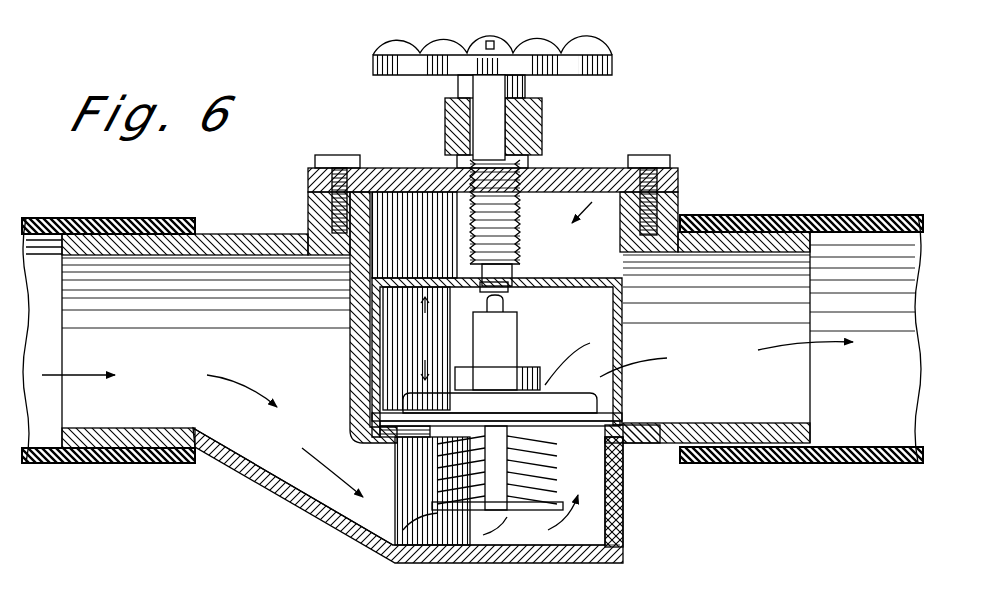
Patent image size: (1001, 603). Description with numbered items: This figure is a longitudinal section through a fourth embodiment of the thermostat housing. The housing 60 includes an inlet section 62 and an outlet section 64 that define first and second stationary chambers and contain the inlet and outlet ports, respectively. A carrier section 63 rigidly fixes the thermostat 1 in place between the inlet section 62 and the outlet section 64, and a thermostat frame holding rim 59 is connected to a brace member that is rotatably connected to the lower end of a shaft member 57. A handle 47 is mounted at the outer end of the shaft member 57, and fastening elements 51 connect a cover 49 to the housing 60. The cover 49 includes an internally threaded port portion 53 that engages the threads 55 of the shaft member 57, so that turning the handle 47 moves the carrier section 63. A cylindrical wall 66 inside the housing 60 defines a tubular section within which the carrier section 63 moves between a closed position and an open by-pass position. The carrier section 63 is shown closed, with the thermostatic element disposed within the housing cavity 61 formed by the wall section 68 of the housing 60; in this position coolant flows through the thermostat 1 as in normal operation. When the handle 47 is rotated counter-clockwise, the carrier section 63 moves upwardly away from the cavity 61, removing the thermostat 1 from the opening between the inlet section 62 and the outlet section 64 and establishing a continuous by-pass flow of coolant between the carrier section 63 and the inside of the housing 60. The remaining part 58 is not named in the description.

The thermostat 1 is at (540, 352).
The handle 47 is at (560, 62).
The cover 49 is at (548, 168).
The fastening elements 51 is at (335, 158).
The internally threaded port portion 53 is at (457, 153).
The threads 55 is at (513, 230).
The shaft member 57 is at (500, 133).
The valve cup 58 is at (620, 310).
The thermostat frame holding rim 59 is at (620, 410).
The housing 60 is at (273, 495).
The housing cavity 61 is at (583, 520).
The inlet section 62 is at (188, 377).
The carrier section 63 is at (613, 178).
The outlet section 64 is at (747, 293).
The cylindrical wall 66 is at (352, 350).
The wall section 68 is at (620, 493).